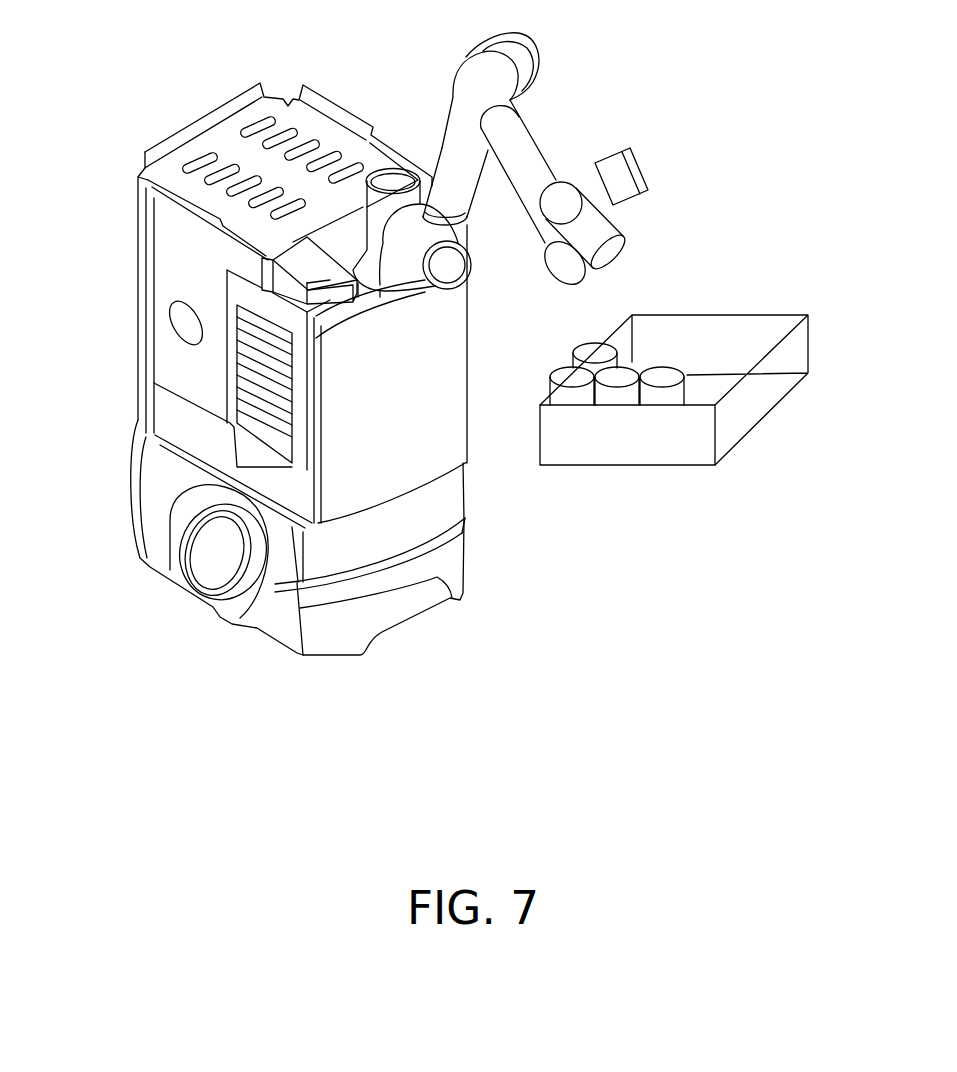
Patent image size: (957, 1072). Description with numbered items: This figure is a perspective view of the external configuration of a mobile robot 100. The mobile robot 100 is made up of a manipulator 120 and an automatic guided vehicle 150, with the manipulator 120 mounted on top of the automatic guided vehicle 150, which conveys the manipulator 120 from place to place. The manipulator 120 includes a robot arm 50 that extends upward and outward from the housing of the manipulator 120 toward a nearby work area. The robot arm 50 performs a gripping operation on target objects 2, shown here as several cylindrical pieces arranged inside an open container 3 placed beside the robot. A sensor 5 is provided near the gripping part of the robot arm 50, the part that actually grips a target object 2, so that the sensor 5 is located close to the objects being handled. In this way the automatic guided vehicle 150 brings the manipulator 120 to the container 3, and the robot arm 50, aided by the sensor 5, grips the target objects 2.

The mobile robot 100 is at (158, 69).
The manipulator 120 is at (140, 282).
The automatic guided vehicle 150 is at (130, 481).
The robot arm 50 is at (520, 152).
The sensor 5 is at (620, 177).
The container 3 is at (773, 357).
The target object 2 is at (663, 377).